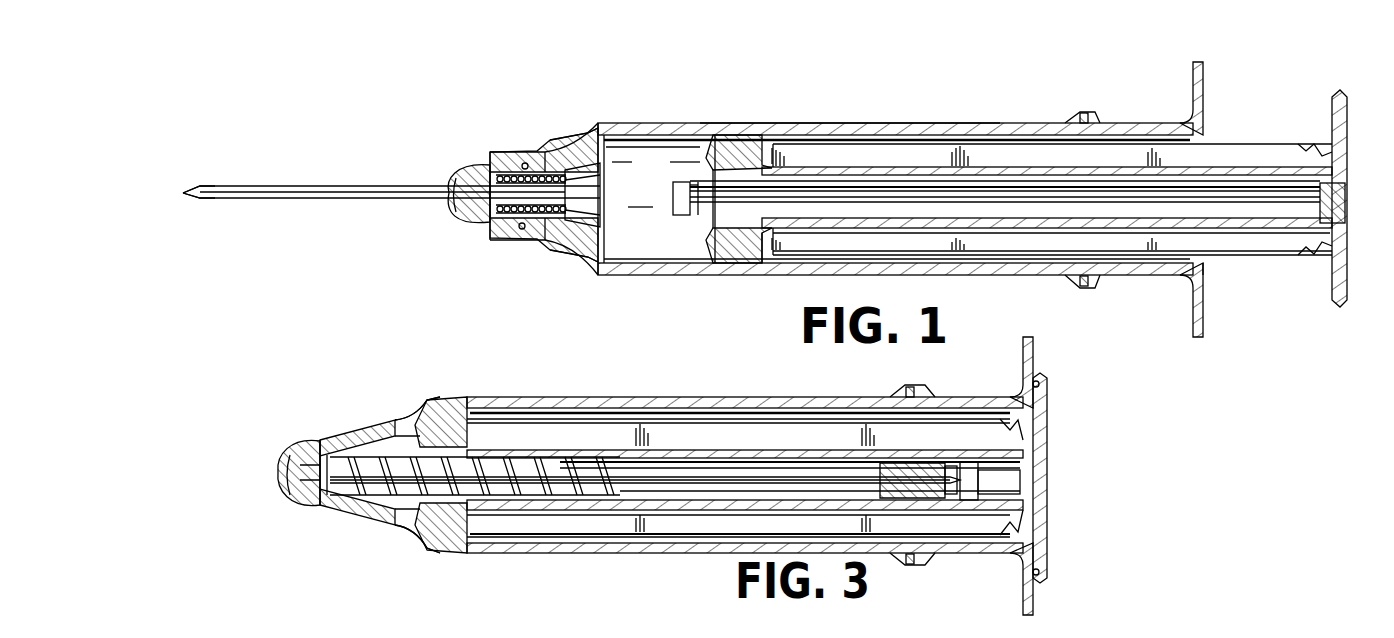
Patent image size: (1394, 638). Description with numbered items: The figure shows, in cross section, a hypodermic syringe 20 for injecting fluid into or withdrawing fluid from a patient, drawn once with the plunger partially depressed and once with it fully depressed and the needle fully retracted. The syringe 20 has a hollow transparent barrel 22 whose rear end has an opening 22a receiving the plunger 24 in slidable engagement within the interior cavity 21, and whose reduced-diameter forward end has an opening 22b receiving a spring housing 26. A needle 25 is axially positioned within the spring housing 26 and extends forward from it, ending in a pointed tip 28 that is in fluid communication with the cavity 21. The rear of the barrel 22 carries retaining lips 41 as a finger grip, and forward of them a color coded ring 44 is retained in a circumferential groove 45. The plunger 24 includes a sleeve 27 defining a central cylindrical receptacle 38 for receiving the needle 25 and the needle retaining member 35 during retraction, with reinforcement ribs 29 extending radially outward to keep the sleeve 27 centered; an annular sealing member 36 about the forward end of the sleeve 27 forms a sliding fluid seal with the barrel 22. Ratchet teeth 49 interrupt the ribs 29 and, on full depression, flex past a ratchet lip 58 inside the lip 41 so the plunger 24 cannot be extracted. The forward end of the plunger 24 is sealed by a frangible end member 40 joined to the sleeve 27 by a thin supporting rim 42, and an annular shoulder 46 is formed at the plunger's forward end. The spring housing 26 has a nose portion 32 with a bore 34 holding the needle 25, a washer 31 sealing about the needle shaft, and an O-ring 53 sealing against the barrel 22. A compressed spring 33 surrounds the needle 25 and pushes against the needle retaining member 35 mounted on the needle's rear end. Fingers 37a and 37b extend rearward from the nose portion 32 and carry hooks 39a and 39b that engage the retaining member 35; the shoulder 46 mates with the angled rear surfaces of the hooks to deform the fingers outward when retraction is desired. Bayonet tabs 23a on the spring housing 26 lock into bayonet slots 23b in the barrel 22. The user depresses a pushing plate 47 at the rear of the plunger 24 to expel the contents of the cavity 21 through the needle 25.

In FIG. 1, the syringe 20 is at (884, 106).
In FIG. 3, the syringe 20 is at (695, 393).
In FIG. 1, the interior cavity 21 is at (671, 199).
In FIG. 1, the barrel 22 is at (1027, 121).
In FIG. 1, the opening 22a is at (1205, 279).
In FIG. 1, the opening 22b is at (487, 156).
In FIG. 1, the bayonet tabs 23a is at (502, 242).
In FIG. 1, the bayonet slots 23b is at (503, 158).
In FIG. 1, the plunger 24 is at (823, 158).
In FIG. 3, the plunger 24 is at (738, 478).
In FIG. 1, the needle 25 is at (322, 183).
In FIG. 3, the needle 25 is at (665, 486).
In FIG. 1, the spring housing 26 is at (451, 164).
In FIG. 3, the spring housing 26 is at (283, 443).
In FIG. 1, the sleeve 27 is at (998, 168).
In FIG. 3, the sleeve 27 is at (666, 448).
In FIG. 1, the pointed tip 28 is at (201, 183).
In FIG. 1, the reinforcement ribs 29 is at (1155, 158).
In FIG. 3, the reinforcement ribs 29 is at (845, 435).
In FIG. 1, the washer 31 is at (495, 229).
In FIG. 3, the washer 31 is at (320, 508).
In FIG. 1, the nose portion 32 is at (456, 214).
In FIG. 3, the nose portion 32 is at (292, 497).
In FIG. 1, the spring 33 is at (522, 220).
In FIG. 3, the spring 33 is at (502, 500).
In FIG. 1, the bore 34 is at (462, 190).
In FIG. 3, the bore 34 is at (286, 476).
In FIG. 1, the needle retaining member 35 is at (538, 170).
In FIG. 3, the needle retaining member 35 is at (920, 470).
In FIG. 1, the annular sealing member 36 is at (738, 134).
In FIG. 1, the finger 37a is at (548, 168).
In FIG. 3, the finger 37a is at (372, 428).
In FIG. 1, the finger 37b is at (548, 226).
In FIG. 3, the finger 37b is at (380, 520).
In FIG. 1, the central cylindrical receptacle 38 is at (942, 190).
In FIG. 3, the central cylindrical receptacle 38 is at (746, 465).
In FIG. 1, the hook 39a is at (577, 164).
In FIG. 3, the hook 39a is at (405, 425).
In FIG. 1, the hook 39b is at (580, 232).
In FIG. 3, the hook 39b is at (420, 538).
In FIG. 1, the frangible end member 40 is at (681, 181).
In FIG. 3, the frangible end member 40 is at (1021, 484).
In FIG. 1, the retaining lips 41 is at (1202, 72).
In FIG. 3, the retaining lips 41 is at (1034, 343).
In FIG. 1, the supporting rim 42 is at (716, 262).
In FIG. 1, the color coded ring 44 is at (1082, 114).
In FIG. 3, the color coded ring 44 is at (906, 389).
In FIG. 1, the circumferential groove 45 is at (1090, 122).
In FIG. 3, the circumferential groove 45 is at (914, 562).
In FIG. 1, the annular shoulder 46 is at (732, 265).
In FIG. 1, the pushing plate 47 is at (1342, 96).
In FIG. 3, the pushing plate 47 is at (1047, 430).
In FIG. 1, the ratchet teeth 49 is at (1308, 145).
In FIG. 3, the ratchet teeth 49 is at (1015, 418).
In FIG. 1, the O-ring 53 is at (521, 230).
In FIG. 1, the ratchet lip 58 is at (1185, 128).
In FIG. 3, the ratchet lip 58 is at (1048, 565).